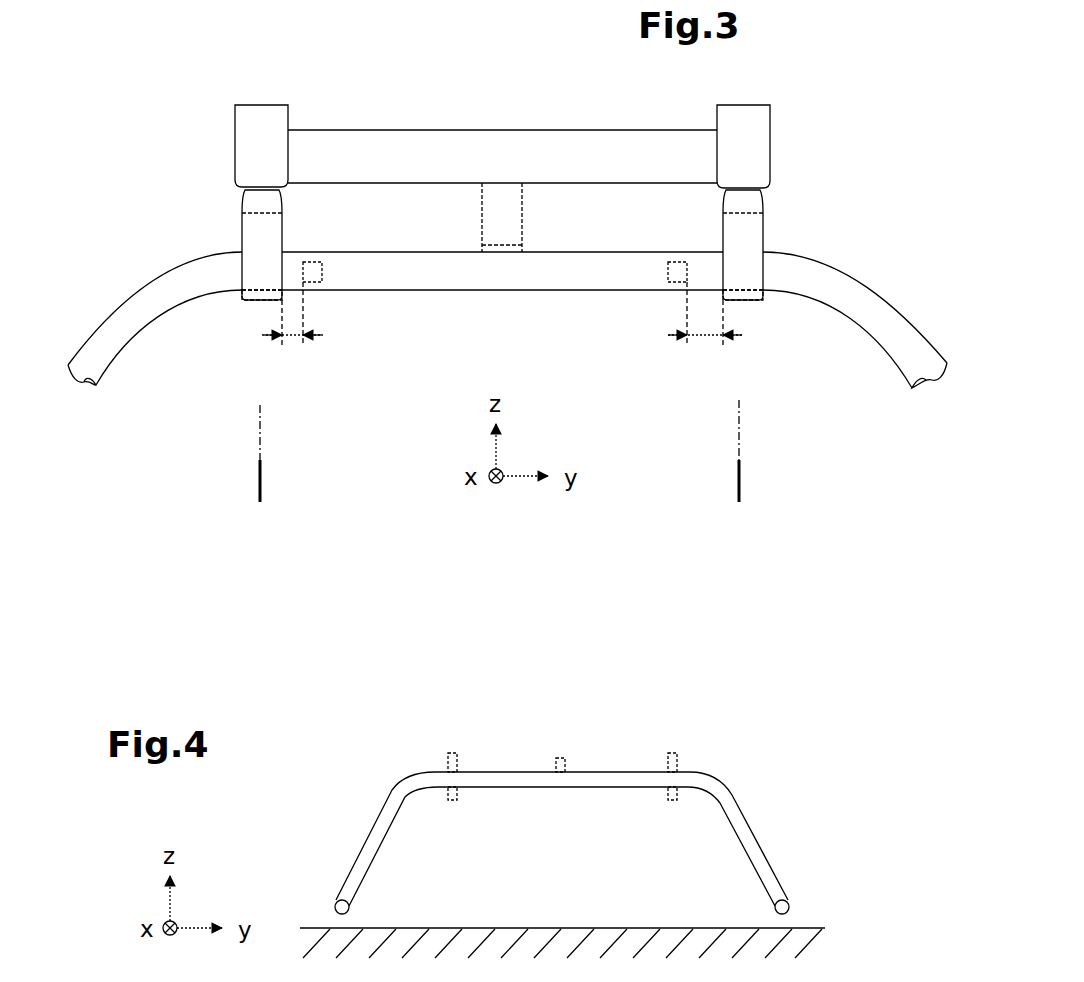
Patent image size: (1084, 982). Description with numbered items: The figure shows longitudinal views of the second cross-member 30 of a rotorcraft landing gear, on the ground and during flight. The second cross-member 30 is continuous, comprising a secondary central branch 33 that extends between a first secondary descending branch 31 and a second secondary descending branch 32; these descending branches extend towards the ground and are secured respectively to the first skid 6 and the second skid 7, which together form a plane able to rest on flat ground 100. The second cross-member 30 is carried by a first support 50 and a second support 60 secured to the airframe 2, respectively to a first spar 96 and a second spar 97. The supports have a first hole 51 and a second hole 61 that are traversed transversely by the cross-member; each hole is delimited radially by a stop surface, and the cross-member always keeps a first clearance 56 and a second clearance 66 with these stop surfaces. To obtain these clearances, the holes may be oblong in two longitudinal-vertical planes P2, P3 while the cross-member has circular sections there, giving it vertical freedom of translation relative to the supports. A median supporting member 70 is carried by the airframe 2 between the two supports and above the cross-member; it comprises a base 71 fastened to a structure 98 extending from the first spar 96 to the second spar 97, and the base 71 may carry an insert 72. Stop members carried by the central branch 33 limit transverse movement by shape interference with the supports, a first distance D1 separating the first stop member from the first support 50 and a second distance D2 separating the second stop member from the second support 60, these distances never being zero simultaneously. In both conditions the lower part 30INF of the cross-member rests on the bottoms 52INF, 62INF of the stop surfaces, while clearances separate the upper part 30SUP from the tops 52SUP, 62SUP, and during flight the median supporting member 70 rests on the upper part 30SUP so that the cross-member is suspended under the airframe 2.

In FIG. 3, the airframe 2 is at (138, 136).
In FIG. 3, the first spar 96 is at (240, 157).
In FIG. 3, the second spar 97 is at (752, 136).
In FIG. 3, the structure 98 is at (548, 148).
In FIG. 3, the base 71 is at (498, 200).
In FIG. 3, the insert 72 is at (498, 246).
In FIG. 3, the median supporting member 70 is at (540, 232).
In FIG. 4, the median supporting member 70 is at (560, 756).
In FIG. 3, the secondary central branch 33 is at (453, 292).
In FIG. 3, the top of the second stop surface 62SUP is at (262, 212).
In FIG. 4, the top of the second stop surface 62SUP is at (446, 766).
In FIG. 3, the bottom of the second stop surface 62INF is at (258, 294).
In FIG. 4, the bottom of the second stop surface 62INF is at (458, 790).
In FIG. 3, the second clearance 66 is at (292, 238).
In FIG. 3, the second support 60 is at (252, 334).
In FIG. 4, the second support 60 is at (452, 748).
In FIG. 3, the top of the first stop surface 52SUP is at (742, 212).
In FIG. 4, the top of the first stop surface 52SUP is at (666, 766).
In FIG. 3, the bottom of the first stop surface 52INF is at (742, 292).
In FIG. 4, the bottom of the first stop surface 52INF is at (672, 802).
In FIG. 3, the first clearance 56 is at (772, 238).
In FIG. 3, the first support 50 is at (766, 310).
In FIG. 4, the first support 50 is at (678, 748).
In FIG. 3, the second distance D2 is at (292, 326).
In FIG. 3, the first distance D1 is at (705, 327).
In FIG. 3, the longitudinal-vertical plane P2 is at (262, 472).
In FIG. 3, the longitudinal-vertical plane P3 is at (741, 470).
In FIG. 3, the second hole 61 is at (232, 270).
In FIG. 3, the second secondary descending branch 32 is at (130, 354).
In FIG. 3, the first hole 51 is at (772, 272).
In FIG. 3, the first secondary descending branch 31 is at (888, 300).
In FIG. 4, the second cross-member 30 is at (792, 864).
In FIG. 4, the upper part of the second cross-member 30SUP is at (602, 766).
In FIG. 4, the lower part of the second cross-member 30INF is at (430, 798).
In FIG. 4, the second skid 7 is at (334, 906).
In FIG. 4, the first skid 6 is at (790, 907).
In FIG. 4, the flat ground 100 is at (614, 928).